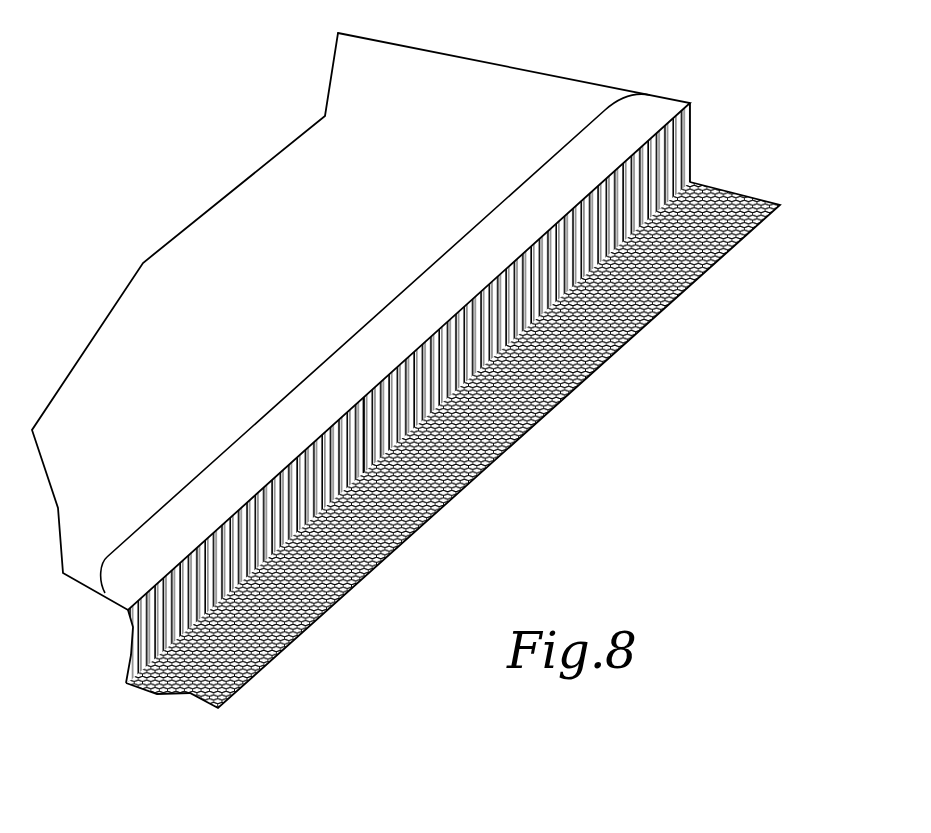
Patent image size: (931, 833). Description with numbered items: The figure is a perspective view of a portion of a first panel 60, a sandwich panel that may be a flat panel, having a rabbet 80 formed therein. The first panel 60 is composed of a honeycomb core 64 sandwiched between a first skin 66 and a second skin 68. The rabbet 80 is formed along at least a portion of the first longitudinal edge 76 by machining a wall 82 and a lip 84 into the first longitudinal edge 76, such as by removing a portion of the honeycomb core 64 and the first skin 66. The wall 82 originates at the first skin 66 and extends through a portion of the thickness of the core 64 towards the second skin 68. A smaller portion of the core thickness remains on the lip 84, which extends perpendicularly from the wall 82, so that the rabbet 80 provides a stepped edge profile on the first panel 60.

The first panel 60 is at (454, 413).
The first core structure 64 is at (663, 158).
The first skin 66 is at (296, 234).
The second skin 68 is at (350, 588).
The first longitudinal edge 76 is at (388, 304).
The rabbet 80 is at (147, 699).
The wall 82 is at (363, 447).
The lip 84 is at (552, 376).